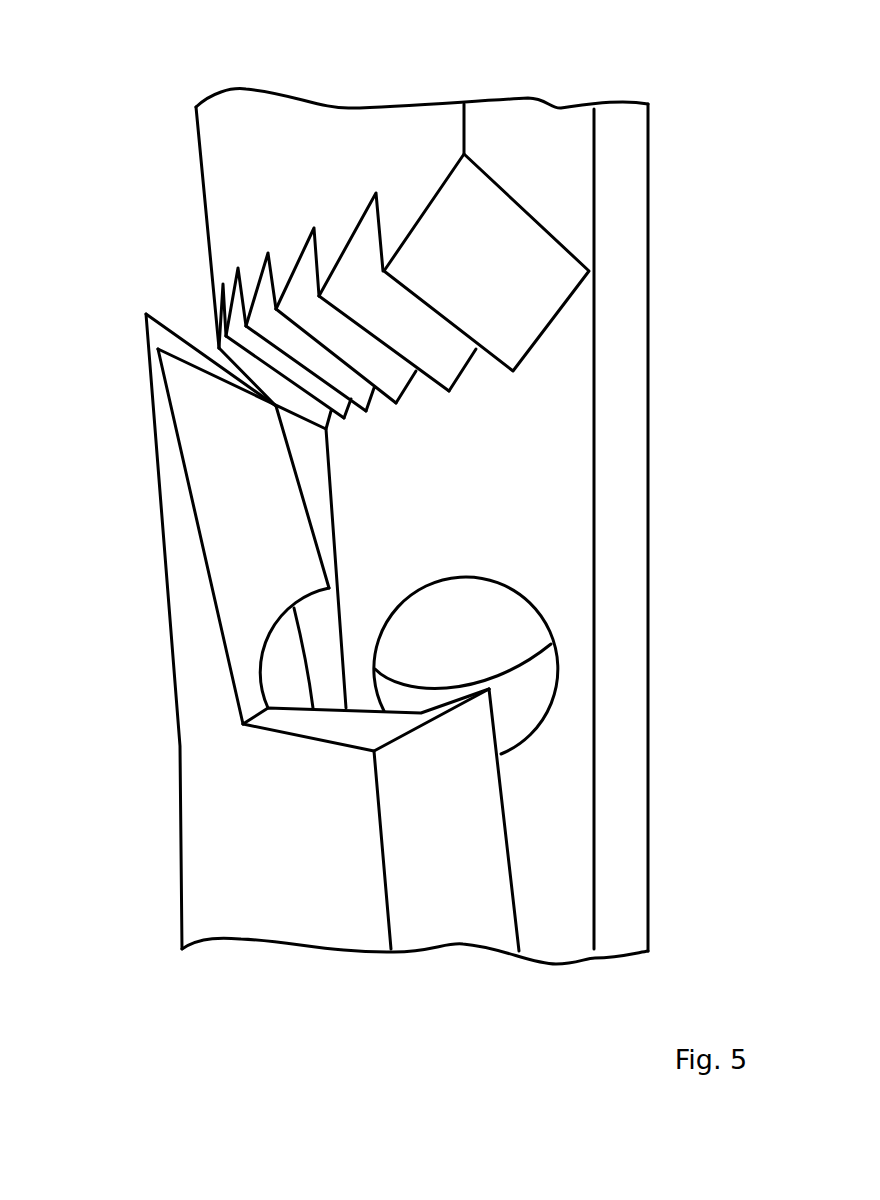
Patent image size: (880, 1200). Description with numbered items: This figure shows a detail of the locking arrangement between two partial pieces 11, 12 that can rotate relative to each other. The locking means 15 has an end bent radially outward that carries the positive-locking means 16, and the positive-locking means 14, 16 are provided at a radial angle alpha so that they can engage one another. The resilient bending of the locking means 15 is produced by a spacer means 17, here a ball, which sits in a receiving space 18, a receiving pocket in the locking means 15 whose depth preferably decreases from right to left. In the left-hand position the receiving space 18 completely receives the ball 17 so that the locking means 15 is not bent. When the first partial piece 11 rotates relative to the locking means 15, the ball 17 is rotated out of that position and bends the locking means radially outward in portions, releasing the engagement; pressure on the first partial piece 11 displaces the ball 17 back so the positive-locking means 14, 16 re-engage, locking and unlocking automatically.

The first partial piece 11 is at (526, 152).
The second partial piece 12 is at (622, 519).
The positive-locking means 14 is at (473, 242).
The locking means 15 is at (299, 958).
The positive-locking means 16 is at (165, 320).
The spacer means 17 is at (468, 622).
The receiving space 18 is at (287, 663).